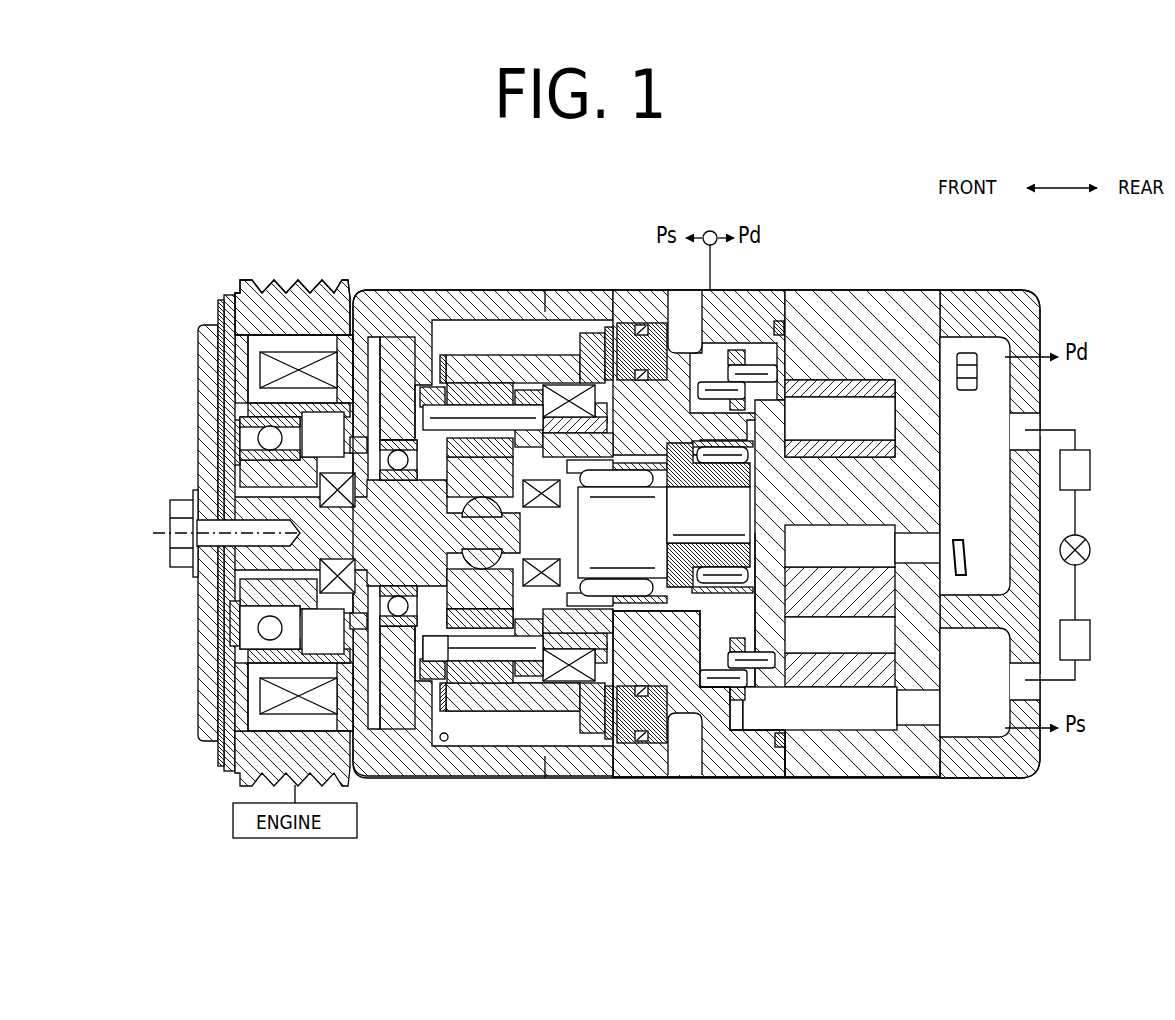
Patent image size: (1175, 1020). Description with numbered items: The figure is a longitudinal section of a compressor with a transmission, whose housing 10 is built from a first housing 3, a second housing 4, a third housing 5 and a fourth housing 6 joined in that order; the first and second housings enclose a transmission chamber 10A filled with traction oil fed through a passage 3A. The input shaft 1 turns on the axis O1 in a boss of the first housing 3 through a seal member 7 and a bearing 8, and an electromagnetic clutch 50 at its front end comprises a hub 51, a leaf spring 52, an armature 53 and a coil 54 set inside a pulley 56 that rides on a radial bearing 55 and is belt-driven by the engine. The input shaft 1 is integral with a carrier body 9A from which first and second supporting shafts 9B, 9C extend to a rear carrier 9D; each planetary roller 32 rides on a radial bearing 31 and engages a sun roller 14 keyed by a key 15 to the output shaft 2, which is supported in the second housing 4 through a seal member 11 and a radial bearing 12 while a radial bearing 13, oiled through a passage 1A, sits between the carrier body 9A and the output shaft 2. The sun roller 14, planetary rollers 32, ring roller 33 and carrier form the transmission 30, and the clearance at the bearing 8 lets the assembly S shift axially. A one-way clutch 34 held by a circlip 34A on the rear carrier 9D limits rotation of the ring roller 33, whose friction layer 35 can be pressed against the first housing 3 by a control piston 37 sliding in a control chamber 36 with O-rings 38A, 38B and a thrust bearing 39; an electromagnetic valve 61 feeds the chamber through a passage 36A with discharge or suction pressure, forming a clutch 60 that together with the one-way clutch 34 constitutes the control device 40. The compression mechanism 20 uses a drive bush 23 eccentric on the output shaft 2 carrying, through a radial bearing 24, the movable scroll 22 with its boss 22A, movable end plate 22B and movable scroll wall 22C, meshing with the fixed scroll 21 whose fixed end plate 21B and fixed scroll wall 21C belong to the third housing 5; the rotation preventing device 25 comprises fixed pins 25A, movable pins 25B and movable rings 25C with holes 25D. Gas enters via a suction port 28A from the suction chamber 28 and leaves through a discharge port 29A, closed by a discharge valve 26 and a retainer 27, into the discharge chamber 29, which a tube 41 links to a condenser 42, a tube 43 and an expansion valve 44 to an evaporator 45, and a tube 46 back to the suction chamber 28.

The input shaft 1 is at (265, 570).
The passage 1A is at (333, 490).
The output shaft 2 is at (622, 532).
The first housing 3 is at (428, 778).
The passage 3A is at (397, 337).
The second housing 4 is at (750, 778).
The third housing 5 is at (818, 773).
The fourth housing 6 is at (960, 771).
The seal member 7 is at (330, 593).
The bearing 8 is at (397, 627).
The carrier body 9A is at (423, 388).
The first supporting shaft 9B is at (488, 405).
The second supporting shaft 9C is at (475, 683).
The rear carrier 9D is at (526, 676).
The housing 10 is at (1014, 779).
The transmission chamber 10A is at (446, 742).
The seal member 11 is at (555, 507).
The radial bearing 12 is at (640, 566).
The radial bearing 13 is at (445, 640).
The sun roller 14 is at (500, 617).
The key 15 is at (502, 512).
The compression mechanism 20 is at (870, 757).
The fixed scroll 21 is at (880, 300).
The fixed end plate 21B is at (897, 637).
The fixed scroll wall 21C is at (806, 656).
The movable scroll 22 is at (778, 321).
The boss 22A is at (708, 515).
The movable end plate 22B is at (783, 427).
The movable scroll wall 22C is at (860, 398).
The drive bush 23 is at (784, 551).
The radial bearing 24 is at (737, 487).
The rotation preventing device 25 is at (735, 348).
The fixed pin 25A is at (730, 693).
The movable pin 25B is at (775, 668).
The movable ring 25C is at (779, 747).
The hole 25D is at (748, 684).
The discharge valve 26 is at (966, 560).
The retainer 27 is at (952, 515).
The suction chamber 28 is at (984, 676).
The suction port 28A is at (925, 715).
The discharge chamber 29 is at (991, 439).
The discharge port 29A is at (903, 555).
The transmission 30 is at (496, 742).
The radial bearing 31 is at (466, 357).
The planetary roller 32 is at (505, 384).
The ring roller 33 is at (530, 391).
The one-way clutch 34 is at (582, 368).
The circlip 34A is at (607, 412).
The friction layer 35 is at (448, 320).
The control chamber 36 is at (645, 325).
The passage 36A is at (686, 345).
The control piston 37 is at (638, 326).
The O-ring 38A is at (615, 733).
The O-ring 38B is at (640, 742).
The thrust bearing 39 is at (608, 330).
The control device 40 is at (668, 757).
The tube 41 is at (1075, 429).
The condenser 42 is at (1090, 470).
The tube 43 is at (1077, 512).
The expansion valve 44 is at (1090, 553).
The evaporator 45 is at (1090, 640).
The tube 46 is at (1076, 680).
The electromagnetic clutch 50 is at (222, 280).
The hub 51 is at (204, 716).
The leaf spring 52 is at (218, 686).
The armature 53 is at (226, 650).
The coil 54 is at (302, 350).
The radial bearing 55 is at (258, 440).
The pulley 56 is at (268, 292).
The clutch 60 is at (640, 322).
The electromagnetic valve 61 is at (710, 231).
The assembly S is at (188, 489).
The axis O1 is at (213, 529).